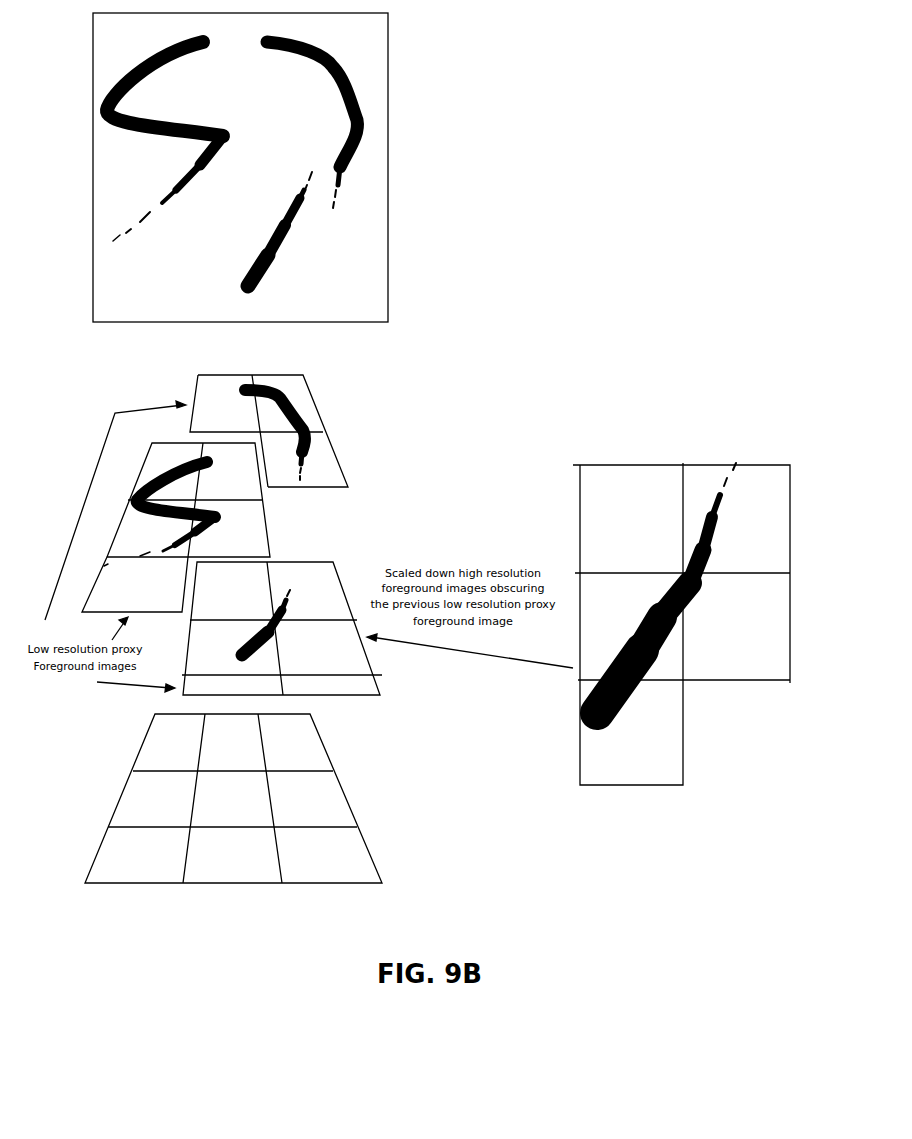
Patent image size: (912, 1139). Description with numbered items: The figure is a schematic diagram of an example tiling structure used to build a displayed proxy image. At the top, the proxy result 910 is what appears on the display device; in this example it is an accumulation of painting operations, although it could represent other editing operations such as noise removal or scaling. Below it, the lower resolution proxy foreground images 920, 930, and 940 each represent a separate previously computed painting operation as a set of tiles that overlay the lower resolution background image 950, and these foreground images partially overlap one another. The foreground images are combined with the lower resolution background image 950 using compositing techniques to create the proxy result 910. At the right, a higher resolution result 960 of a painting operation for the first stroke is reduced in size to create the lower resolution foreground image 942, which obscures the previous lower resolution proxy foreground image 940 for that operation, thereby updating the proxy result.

The proxy result 910 is at (388, 178).
The lower resolution proxy foreground image 920 is at (348, 487).
The lower resolution proxy foreground image 930 is at (270, 517).
The lower resolution proxy foreground image 940 is at (380, 697).
The lower resolution foreground image 942 is at (373, 653).
The lower resolution background image 950 is at (85, 887).
The higher resolution result 960 is at (685, 722).